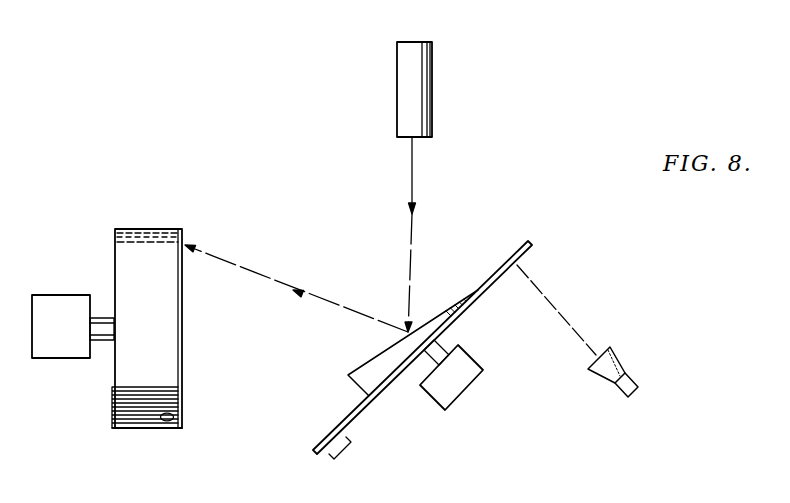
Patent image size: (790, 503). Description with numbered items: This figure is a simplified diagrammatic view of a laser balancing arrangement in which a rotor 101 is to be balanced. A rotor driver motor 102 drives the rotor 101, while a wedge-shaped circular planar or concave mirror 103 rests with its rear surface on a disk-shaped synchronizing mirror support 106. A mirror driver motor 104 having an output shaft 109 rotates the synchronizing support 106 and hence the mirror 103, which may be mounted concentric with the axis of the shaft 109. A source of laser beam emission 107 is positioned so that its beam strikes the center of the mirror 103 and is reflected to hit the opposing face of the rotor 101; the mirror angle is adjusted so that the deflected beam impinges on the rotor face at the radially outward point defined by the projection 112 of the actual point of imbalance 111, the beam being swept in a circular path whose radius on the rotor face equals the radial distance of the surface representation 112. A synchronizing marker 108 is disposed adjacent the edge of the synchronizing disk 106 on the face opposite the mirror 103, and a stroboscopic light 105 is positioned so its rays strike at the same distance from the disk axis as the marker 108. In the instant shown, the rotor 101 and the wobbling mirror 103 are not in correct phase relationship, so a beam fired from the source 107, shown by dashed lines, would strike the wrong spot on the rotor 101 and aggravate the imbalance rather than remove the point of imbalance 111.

The rotor 101 is at (160, 242).
The rotor driver motor 102 is at (57, 297).
The wedge-shaped mirror 103 is at (363, 367).
The mirror driver motor 104 is at (457, 388).
The stroboscopic light 105 is at (628, 377).
The synchronizing mirror support 106 is at (533, 246).
The source of laser beam emission 107 is at (410, 108).
The synchronizing marker 108 is at (328, 457).
The output shaft 109 is at (430, 346).
The point of imbalance 111 is at (157, 426).
The projection of the point of imbalance 112 is at (175, 417).